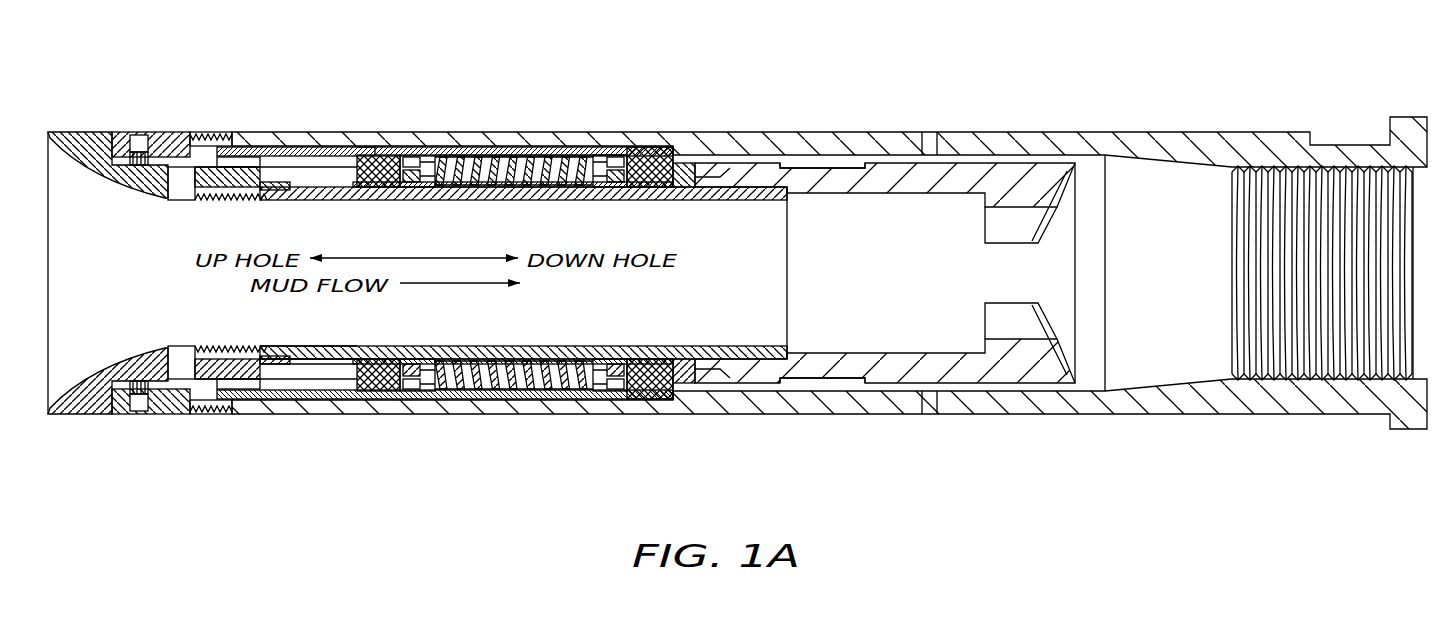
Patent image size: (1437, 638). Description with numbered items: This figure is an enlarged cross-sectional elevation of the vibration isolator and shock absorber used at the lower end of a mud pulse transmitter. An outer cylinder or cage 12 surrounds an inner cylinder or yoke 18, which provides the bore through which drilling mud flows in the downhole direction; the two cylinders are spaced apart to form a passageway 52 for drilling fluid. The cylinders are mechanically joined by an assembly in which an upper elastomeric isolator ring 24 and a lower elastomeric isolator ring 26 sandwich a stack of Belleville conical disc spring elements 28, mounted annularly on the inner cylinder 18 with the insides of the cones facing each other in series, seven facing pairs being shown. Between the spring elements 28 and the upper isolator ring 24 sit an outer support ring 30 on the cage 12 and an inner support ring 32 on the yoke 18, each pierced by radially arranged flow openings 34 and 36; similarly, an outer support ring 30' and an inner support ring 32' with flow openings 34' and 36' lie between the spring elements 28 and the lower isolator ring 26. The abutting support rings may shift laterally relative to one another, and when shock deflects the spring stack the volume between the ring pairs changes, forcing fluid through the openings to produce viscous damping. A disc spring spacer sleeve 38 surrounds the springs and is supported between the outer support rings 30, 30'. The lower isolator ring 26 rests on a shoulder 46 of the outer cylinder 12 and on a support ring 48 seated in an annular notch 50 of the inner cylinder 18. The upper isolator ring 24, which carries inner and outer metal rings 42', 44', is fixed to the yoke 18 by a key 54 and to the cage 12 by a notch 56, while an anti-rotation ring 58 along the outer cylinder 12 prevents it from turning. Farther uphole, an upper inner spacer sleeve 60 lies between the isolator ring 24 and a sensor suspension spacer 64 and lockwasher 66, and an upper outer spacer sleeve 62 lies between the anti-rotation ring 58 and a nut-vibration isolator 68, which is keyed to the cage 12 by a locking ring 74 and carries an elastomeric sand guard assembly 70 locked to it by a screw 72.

The outer cylinder or cage 12 is at (1005, 132).
The inner cylinder or yoke 18 is at (957, 170).
The upper elastomeric isolator ring 24 is at (388, 152).
The lower elastomeric isolator ring 26 is at (640, 150).
The Belleville conical disc spring elements 28 is at (500, 158).
The outer support ring 30 is at (432, 133).
The outer support ring 30' is at (636, 96).
The inner support ring 32 is at (514, 111).
The inner support ring 32' is at (491, 207).
The flow openings 34 is at (424, 407).
The flow openings 34' is at (626, 413).
The flow openings 36 is at (491, 347).
The flow openings 36' is at (602, 413).
The disc spring spacer sleeve 38 is at (575, 145).
The inner metal ring 42' is at (391, 349).
The outer metal ring 44' is at (445, 259).
The shoulder 46 is at (682, 164).
The support ring 48 is at (698, 172).
The annular notch 50 is at (700, 372).
The passageway 52 is at (847, 163).
The key 54 is at (375, 196).
The notch 56 is at (368, 150).
The anti-rotation ring 58 is at (305, 152).
The upper inner spacer sleeve 60 is at (310, 362).
The upper outer spacer sleeve 62 is at (297, 403).
The sensor suspension spacer 64 is at (290, 193).
The lockwasher 66 is at (240, 165).
The nut-vibration isolator 68 is at (164, 134).
The elastomeric sand guard assembly 70 is at (92, 148).
The screw 72 is at (141, 134).
The locking ring 74 is at (198, 134).